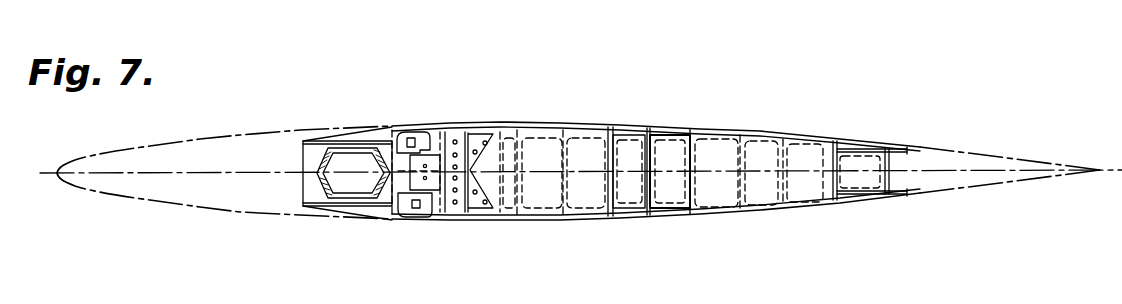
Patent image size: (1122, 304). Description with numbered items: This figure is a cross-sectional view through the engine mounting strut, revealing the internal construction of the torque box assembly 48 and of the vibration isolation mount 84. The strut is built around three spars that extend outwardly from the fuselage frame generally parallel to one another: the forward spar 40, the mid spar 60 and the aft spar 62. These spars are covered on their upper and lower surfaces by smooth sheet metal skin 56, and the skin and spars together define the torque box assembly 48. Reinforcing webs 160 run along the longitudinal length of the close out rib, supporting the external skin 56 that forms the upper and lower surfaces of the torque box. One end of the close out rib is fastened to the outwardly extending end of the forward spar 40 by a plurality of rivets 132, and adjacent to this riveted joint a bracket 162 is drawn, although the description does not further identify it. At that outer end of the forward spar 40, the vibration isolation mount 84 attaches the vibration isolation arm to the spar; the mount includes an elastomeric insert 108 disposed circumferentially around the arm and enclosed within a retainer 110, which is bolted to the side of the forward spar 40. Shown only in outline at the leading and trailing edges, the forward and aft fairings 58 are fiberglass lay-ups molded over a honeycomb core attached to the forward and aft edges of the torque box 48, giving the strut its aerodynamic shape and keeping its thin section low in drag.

The forward spar 40 is at (423, 135).
The torque box assembly 48 is at (775, 213).
The skin 56 is at (600, 126).
The forward and aft fairings 58 is at (150, 203).
The mid spar 60 is at (648, 135).
The aft spar 62 is at (863, 148).
The vibration isolation mount 84 is at (363, 207).
The elastomeric insert 108 is at (317, 177).
The retainer 110 is at (318, 140).
The rivets 132 is at (455, 142).
The reinforcing webs 160 is at (537, 130).
The bracket 162 is at (477, 208).